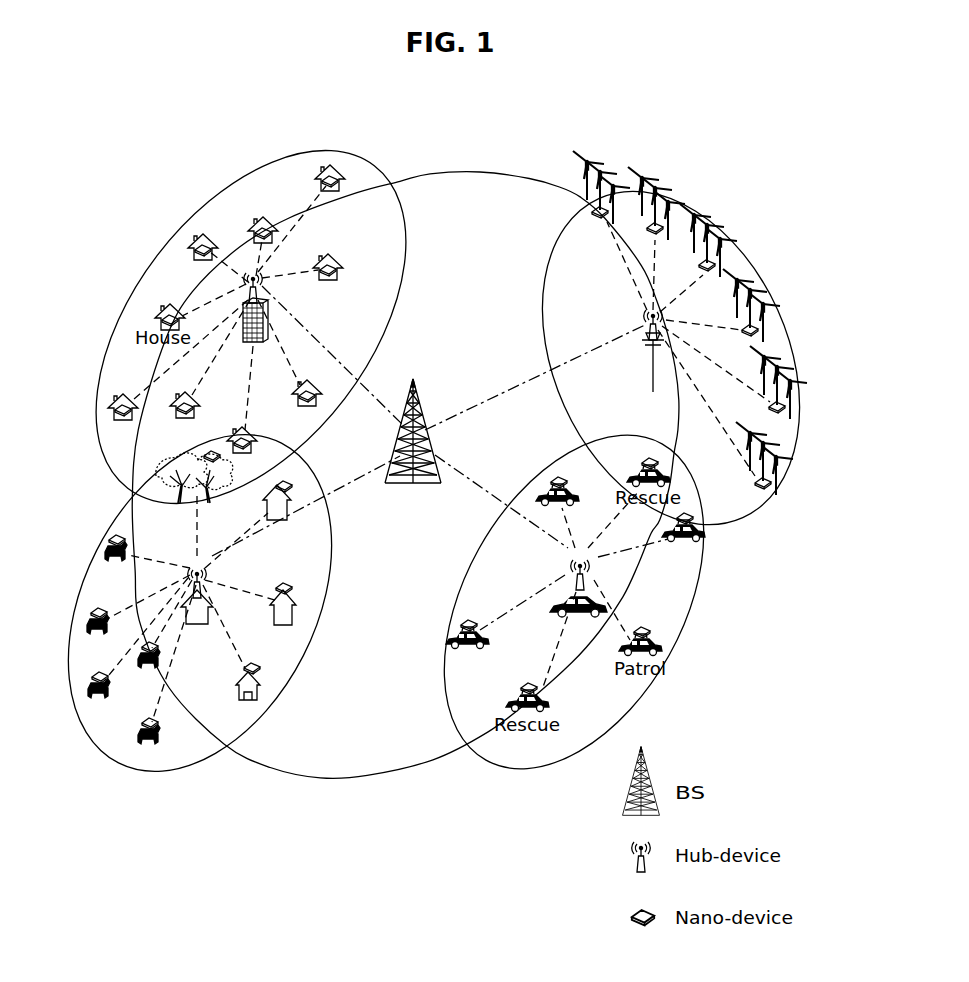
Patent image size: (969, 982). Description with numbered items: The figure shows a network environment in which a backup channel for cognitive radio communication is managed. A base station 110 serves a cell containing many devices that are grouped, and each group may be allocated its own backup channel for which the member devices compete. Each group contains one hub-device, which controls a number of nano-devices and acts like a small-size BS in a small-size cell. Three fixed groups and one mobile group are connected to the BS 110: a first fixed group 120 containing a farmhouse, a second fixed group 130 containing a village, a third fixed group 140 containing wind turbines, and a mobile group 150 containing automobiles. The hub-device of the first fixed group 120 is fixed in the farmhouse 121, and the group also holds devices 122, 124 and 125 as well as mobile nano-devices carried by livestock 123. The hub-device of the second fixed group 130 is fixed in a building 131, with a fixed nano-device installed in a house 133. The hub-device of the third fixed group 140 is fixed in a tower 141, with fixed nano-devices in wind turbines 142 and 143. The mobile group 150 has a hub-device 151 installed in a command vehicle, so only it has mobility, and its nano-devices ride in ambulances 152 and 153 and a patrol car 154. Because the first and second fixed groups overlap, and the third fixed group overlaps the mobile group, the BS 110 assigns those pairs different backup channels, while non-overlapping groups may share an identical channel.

The base station 110 is at (416, 395).
The first fixed group 120 is at (150, 772).
The farmhouse hub-device 121 is at (207, 590).
The device 122 is at (298, 610).
The livestock 123 is at (117, 542).
The device 124 is at (268, 688).
The device 125 is at (156, 462).
The second fixed group 130 is at (252, 177).
The building hub-device 131 is at (264, 305).
The house 133 is at (337, 180).
The third fixed group 140 is at (737, 253).
The tower hub-device 141 is at (648, 352).
The wind turbine 142 is at (784, 400).
The wind turbine 143 is at (763, 323).
The mobile group 150 is at (522, 765).
The mobile hub-device 151 is at (606, 587).
The ambulance 152 is at (705, 536).
The ambulance 153 is at (455, 630).
The patrol car 154 is at (548, 486).